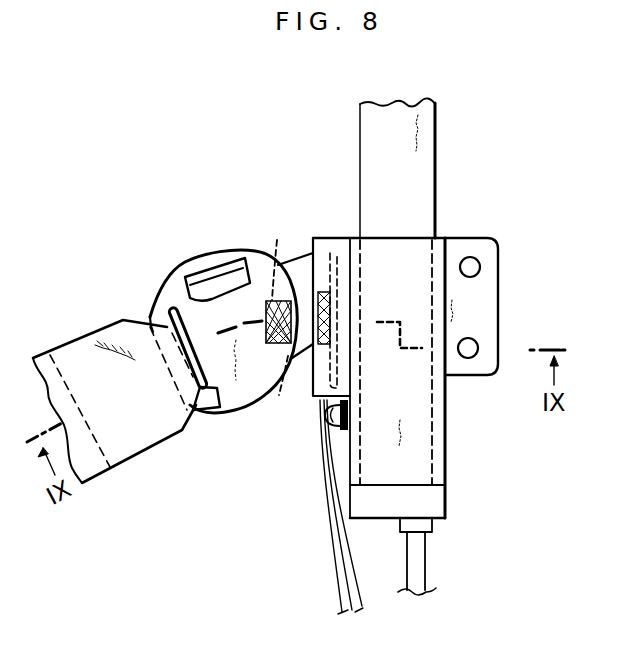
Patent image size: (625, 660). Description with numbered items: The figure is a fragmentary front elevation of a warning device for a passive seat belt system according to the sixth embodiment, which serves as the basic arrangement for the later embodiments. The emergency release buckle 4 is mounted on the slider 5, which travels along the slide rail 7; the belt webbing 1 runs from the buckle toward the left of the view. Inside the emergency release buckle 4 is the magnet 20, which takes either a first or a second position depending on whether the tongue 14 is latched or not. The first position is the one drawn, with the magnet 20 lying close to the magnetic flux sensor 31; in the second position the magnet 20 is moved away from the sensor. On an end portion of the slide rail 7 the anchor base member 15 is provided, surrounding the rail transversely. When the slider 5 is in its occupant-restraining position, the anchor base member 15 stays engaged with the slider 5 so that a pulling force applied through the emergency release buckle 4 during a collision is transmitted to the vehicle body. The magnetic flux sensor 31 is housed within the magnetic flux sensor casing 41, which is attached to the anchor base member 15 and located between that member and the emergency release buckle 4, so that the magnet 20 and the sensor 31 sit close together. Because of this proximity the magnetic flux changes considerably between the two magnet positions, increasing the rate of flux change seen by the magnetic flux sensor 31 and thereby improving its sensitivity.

The seat belt webbing 1 is at (157, 423).
The emergency release buckle 4 is at (225, 307).
The slider 5 is at (297, 272).
The slide rail 7 is at (383, 123).
The tongue 14 is at (154, 308).
The anchor base member 15 is at (407, 263).
The magnet 20 is at (223, 314).
The magnetic flux sensor 31 is at (317, 338).
The magnetic flux sensor casing 41 is at (312, 397).